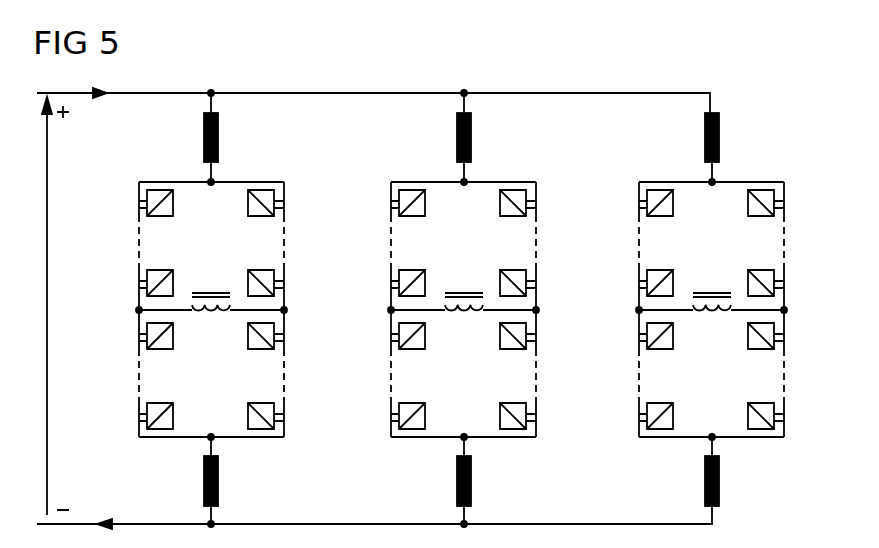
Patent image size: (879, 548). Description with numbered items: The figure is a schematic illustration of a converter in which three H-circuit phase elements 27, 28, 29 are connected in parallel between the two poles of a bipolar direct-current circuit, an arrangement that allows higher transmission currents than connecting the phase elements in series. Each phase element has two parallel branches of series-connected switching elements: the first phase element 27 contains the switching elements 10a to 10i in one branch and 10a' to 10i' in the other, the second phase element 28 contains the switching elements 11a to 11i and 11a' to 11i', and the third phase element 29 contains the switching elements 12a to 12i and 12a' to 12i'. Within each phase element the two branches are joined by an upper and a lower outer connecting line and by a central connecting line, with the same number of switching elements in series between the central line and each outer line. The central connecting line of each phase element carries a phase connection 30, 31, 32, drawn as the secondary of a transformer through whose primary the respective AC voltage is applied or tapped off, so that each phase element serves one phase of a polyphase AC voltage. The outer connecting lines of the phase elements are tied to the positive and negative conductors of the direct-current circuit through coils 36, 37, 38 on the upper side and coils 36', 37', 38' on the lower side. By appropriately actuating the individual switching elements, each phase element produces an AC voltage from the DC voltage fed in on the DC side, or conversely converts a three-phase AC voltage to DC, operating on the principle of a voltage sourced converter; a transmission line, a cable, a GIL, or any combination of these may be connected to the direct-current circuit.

The switching element 10a is at (121, 195).
The switching element 10a' is at (284, 175).
The switching element 10i is at (114, 407).
The switching element 10i' is at (265, 445).
The switching element 11a is at (375, 196).
The switching element 11a' is at (540, 175).
The switching element 11i is at (365, 407).
The switching element 11i' is at (516, 445).
The switching element 12a is at (614, 195).
The switching element 12a' is at (783, 175).
The switching element 12i is at (617, 407).
The switching element 12i' is at (766, 445).
The phase element 27 is at (245, 168).
The phase element 28 is at (503, 168).
The phase element 29 is at (752, 168).
The phase connection 30 is at (211, 280).
The phase connection 31 is at (464, 280).
The phase connection 32 is at (711, 280).
The coil 36 is at (177, 137).
The coil 36' is at (176, 481).
The coil 37 is at (432, 137).
The coil 37' is at (431, 481).
The coil 38 is at (678, 137).
The coil 38' is at (678, 481).